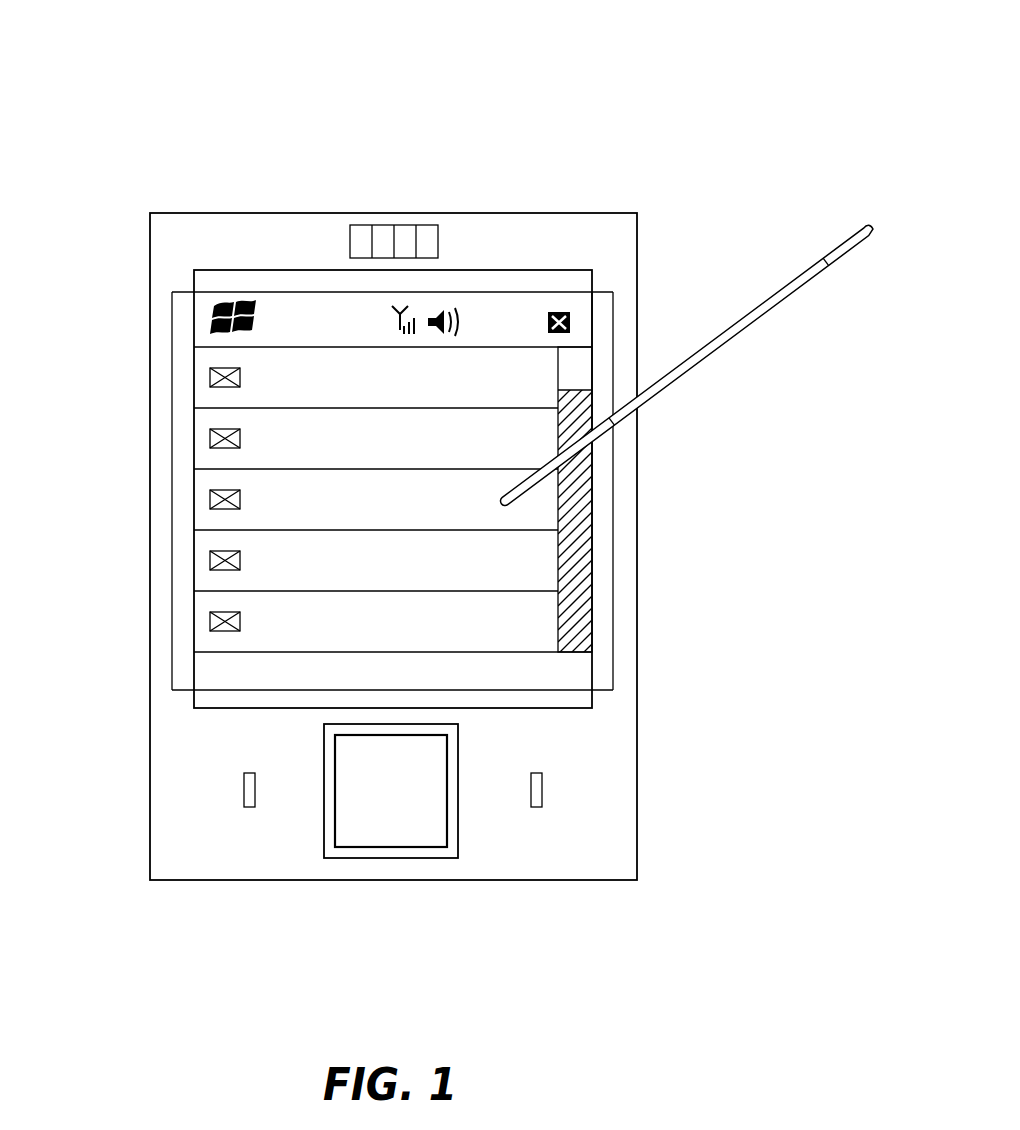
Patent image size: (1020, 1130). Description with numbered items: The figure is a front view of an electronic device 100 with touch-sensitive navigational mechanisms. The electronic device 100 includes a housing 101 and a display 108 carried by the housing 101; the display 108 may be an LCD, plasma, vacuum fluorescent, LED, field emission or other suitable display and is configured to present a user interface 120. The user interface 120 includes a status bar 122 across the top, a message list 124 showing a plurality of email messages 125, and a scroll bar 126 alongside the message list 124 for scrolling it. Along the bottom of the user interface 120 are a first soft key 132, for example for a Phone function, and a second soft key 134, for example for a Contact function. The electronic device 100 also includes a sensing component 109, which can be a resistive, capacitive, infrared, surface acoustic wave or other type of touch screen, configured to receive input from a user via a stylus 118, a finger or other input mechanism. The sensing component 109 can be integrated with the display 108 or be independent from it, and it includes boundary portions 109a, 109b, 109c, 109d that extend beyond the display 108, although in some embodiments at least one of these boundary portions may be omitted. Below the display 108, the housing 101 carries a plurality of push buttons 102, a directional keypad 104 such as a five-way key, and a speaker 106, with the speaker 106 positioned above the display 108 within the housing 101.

The electronic device 100 is at (690, 124).
The housing 101 is at (612, 777).
The push buttons 102 is at (252, 800).
The directional keypad 104 is at (355, 858).
The speaker 106 is at (397, 224).
The display 108 is at (602, 486).
The sensing component 109 is at (593, 598).
The boundary portion 109a is at (533, 283).
The boundary portion 109b is at (577, 703).
The boundary portion 109c is at (183, 295).
The boundary portion 109d is at (605, 290).
The stylus 118 is at (760, 318).
The user interface 120 is at (186, 328).
The status bar 122 is at (593, 307).
The message list 124 is at (183, 485).
The email messages 125 is at (194, 652).
The scroll bar 126 is at (592, 542).
The first soft key 132 is at (210, 674).
The second soft key 134 is at (578, 670).